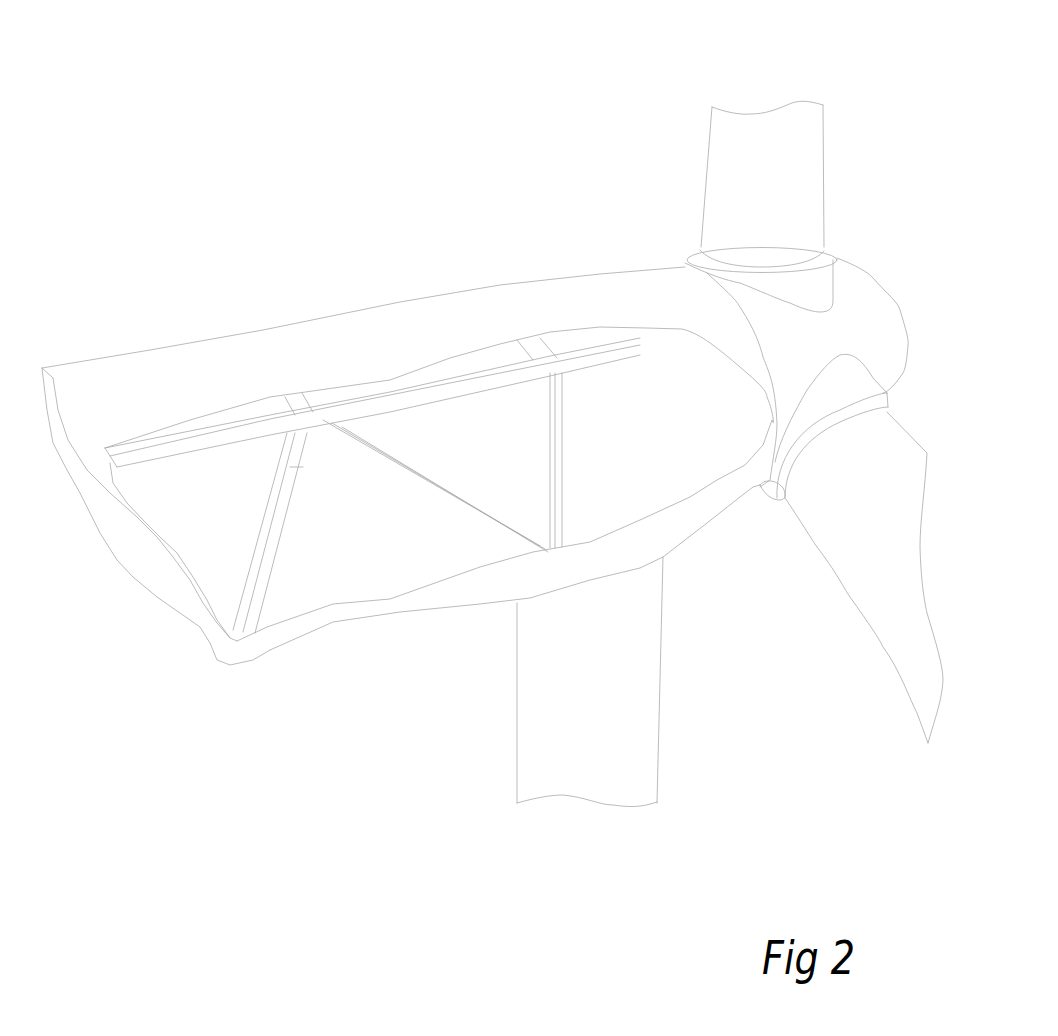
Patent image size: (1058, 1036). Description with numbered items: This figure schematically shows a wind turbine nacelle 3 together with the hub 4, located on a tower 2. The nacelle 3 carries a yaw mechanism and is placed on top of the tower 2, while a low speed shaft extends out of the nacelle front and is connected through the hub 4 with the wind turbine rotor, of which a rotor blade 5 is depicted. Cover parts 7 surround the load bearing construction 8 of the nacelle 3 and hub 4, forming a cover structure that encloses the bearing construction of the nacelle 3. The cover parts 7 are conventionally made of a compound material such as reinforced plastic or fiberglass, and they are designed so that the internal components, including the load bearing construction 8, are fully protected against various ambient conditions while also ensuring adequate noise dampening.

The tower 2 is at (610, 728).
The wind turbine nacelle 3 is at (252, 277).
The wind turbine hub 4 is at (885, 318).
The rotor blade 5 is at (735, 175).
The cover parts 7 is at (412, 320).
The load bearing construction 8 is at (250, 597).